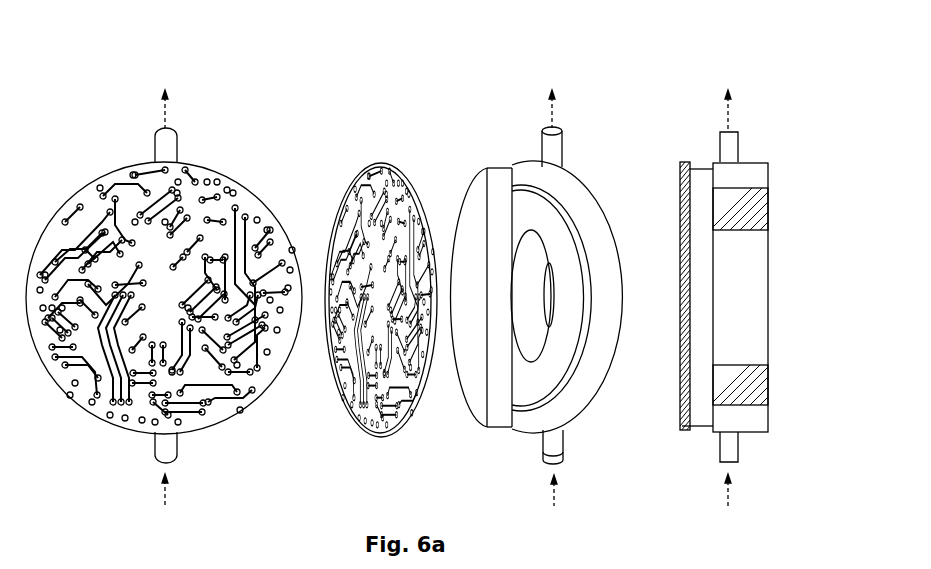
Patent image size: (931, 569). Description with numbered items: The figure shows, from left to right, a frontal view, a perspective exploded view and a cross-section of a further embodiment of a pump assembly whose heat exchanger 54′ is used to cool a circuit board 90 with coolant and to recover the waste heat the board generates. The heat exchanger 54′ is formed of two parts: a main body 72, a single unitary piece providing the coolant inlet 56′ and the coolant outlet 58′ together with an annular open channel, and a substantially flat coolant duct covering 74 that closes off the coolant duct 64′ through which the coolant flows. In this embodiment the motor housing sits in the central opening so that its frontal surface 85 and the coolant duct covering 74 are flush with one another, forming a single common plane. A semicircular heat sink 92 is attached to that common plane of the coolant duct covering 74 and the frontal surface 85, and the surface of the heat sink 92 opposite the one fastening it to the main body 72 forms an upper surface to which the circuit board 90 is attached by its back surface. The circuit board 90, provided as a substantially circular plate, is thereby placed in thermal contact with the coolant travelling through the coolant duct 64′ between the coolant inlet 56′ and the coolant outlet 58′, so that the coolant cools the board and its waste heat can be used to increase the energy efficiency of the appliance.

The coolant outlet 58′ is at (167, 126).
The coolant inlet 56′ is at (178, 458).
The circuit board 90 is at (105, 398).
The heat sink 92 is at (487, 167).
The heat exchanger 54′ is at (620, 90).
The coolant duct covering 74 is at (537, 182).
The frontal surface 85 is at (539, 224).
The main body 72 is at (592, 396).
The coolant duct 64′ is at (747, 170).